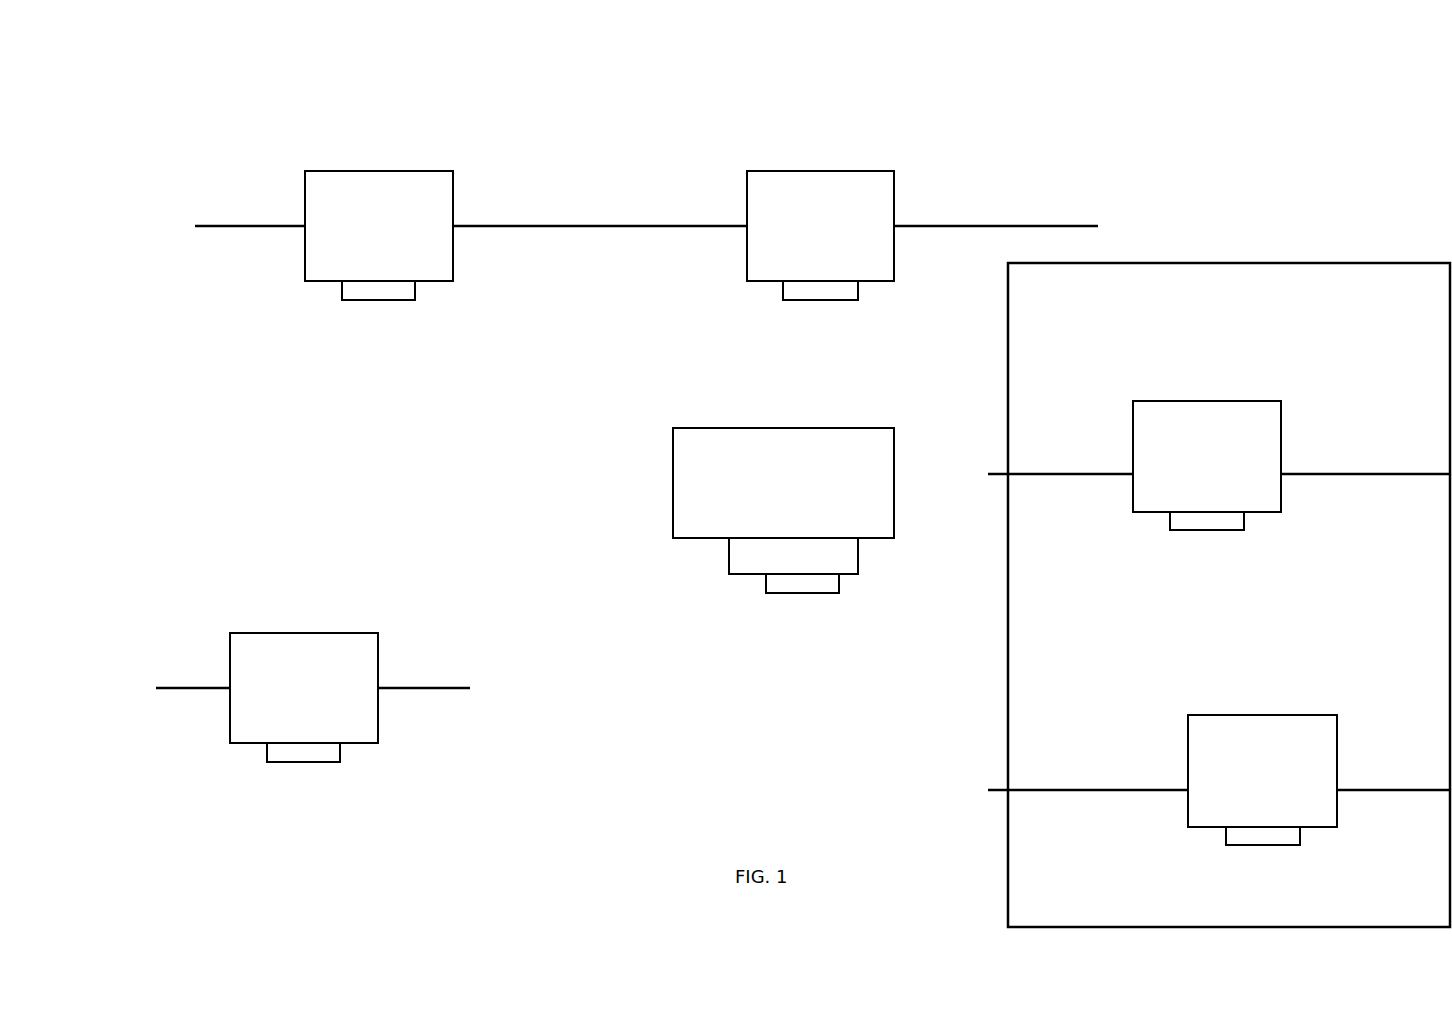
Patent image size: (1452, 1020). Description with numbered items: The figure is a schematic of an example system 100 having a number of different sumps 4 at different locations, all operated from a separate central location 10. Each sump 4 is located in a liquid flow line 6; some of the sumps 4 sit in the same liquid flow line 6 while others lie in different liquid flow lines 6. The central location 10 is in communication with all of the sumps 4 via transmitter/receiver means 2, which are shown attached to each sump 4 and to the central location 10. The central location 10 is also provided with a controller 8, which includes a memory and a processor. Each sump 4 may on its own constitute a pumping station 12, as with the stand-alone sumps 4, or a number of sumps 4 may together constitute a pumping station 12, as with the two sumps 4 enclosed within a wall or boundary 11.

The system 100 is at (160, 133).
The transmitter/receiver means 2 is at (390, 300).
The sump 4 is at (405, 170).
The liquid flow line 6 is at (655, 225).
The controller 8 is at (738, 563).
The central location 10 is at (697, 450).
The wall or boundary 11 is at (1017, 353).
The pumping station 12 is at (427, 157).